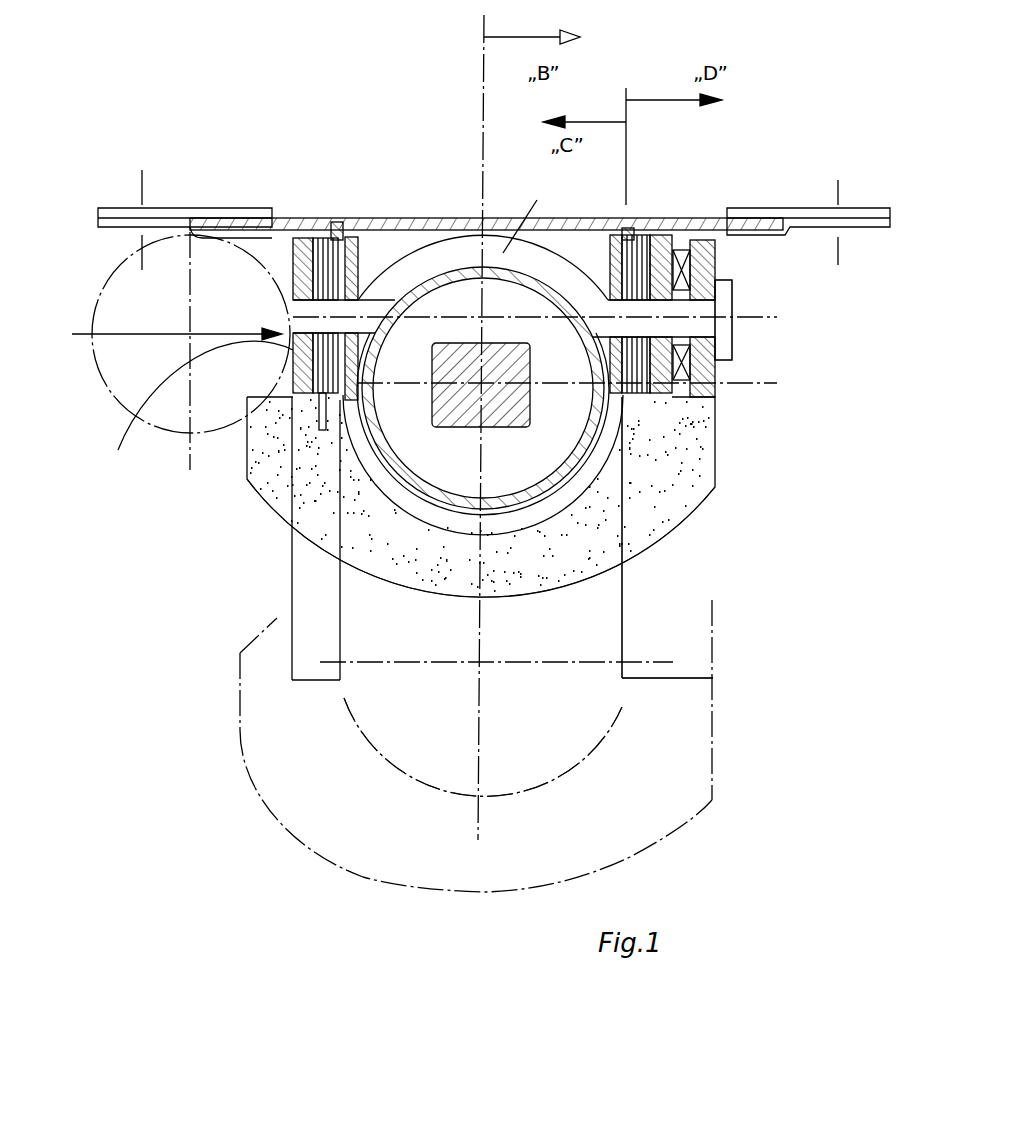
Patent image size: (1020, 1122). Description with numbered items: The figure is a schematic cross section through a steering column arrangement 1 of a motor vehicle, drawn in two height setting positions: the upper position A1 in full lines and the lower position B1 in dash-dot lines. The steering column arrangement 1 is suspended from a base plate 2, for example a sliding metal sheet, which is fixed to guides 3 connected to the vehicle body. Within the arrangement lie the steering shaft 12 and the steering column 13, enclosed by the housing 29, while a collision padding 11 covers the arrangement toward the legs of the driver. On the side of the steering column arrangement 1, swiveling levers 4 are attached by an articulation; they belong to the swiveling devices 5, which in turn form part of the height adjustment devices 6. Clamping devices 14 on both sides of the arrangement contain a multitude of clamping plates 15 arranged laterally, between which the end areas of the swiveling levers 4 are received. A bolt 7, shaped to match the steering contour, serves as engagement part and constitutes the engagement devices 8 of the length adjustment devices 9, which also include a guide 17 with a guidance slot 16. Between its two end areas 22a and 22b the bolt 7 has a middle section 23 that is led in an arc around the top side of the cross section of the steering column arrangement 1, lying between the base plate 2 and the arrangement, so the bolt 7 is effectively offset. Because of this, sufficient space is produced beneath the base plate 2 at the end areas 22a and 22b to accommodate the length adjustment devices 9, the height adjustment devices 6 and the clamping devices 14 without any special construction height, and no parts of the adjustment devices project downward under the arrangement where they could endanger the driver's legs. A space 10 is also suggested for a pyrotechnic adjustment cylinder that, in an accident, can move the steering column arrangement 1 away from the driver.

The steering column arrangement 1 is at (494, 464).
The base plate 2 is at (337, 228).
The guides 3 is at (205, 210).
The swiveling levers 4 is at (312, 393).
The swiveling devices 5 is at (320, 451).
The height adjustment devices 6 is at (641, 404).
The bolt 7 is at (534, 207).
The engagement devices 8 is at (466, 252).
The length adjustment devices 9 is at (742, 345).
The space for receiving a pyrotechnic adjustment cylinder 10 is at (122, 382).
The collision padding 11 is at (640, 547).
The steering shaft 12 is at (532, 343).
The steering column 13 is at (415, 475).
The clamping devices 14 is at (655, 214).
The clamping plates 15 is at (290, 373).
The guidance slot 16 is at (293, 325).
The guide 17 is at (197, 413).
The end area 22a is at (384, 316).
The end area 22b is at (692, 312).
The middle section 23 is at (413, 250).
The housing 29 is at (623, 502).
The upper position A1 is at (645, 596).
The lower position B1 is at (333, 868).